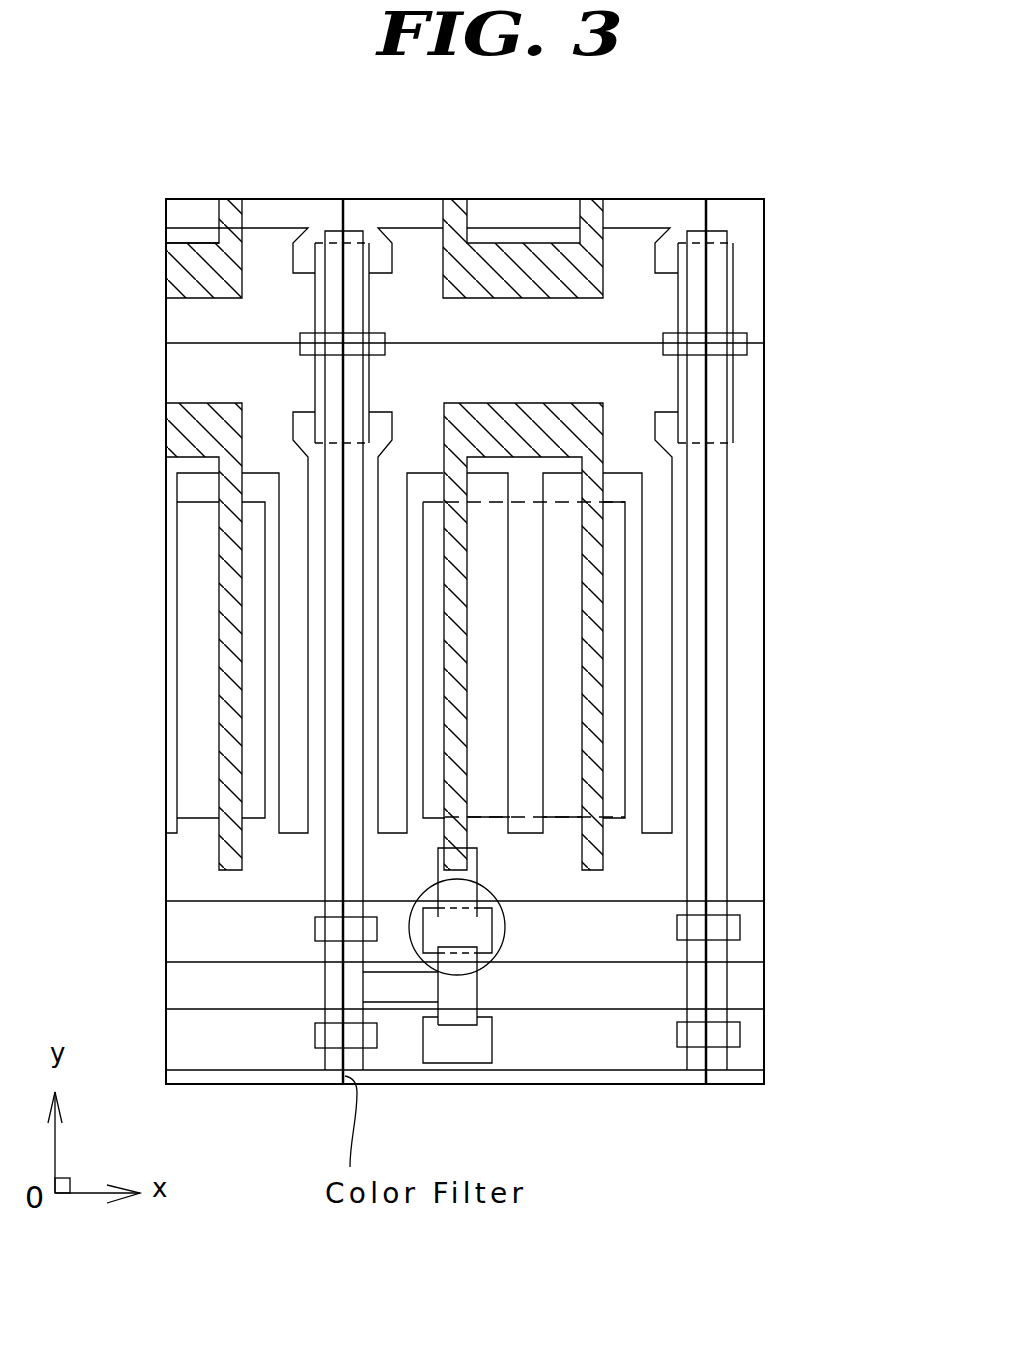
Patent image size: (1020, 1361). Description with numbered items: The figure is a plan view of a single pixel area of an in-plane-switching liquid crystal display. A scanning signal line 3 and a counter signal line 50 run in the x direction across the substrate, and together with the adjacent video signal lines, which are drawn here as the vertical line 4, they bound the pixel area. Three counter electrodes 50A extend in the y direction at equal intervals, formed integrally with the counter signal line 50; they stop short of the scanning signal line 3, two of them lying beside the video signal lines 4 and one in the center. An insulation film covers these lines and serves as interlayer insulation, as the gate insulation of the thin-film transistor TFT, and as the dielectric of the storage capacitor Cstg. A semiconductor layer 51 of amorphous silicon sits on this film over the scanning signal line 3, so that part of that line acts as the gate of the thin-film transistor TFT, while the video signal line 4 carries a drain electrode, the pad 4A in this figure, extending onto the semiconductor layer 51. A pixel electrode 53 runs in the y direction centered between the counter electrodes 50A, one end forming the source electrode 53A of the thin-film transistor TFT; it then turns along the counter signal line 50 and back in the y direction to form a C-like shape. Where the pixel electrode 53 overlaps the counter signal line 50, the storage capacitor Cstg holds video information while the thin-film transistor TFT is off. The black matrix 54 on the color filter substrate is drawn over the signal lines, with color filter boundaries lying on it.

The scanning signal line 3 is at (207, 944).
The drain signal line (data line) 4 is at (328, 735).
The drain signal line contact pad 4A is at (465, 1025).
The counter signal line 50 is at (417, 365).
The counter electrode 50A is at (390, 580).
The semiconductor layer 51 is at (492, 928).
The pixel electrode 53 is at (595, 570).
The source electrode 53A is at (479, 862).
The black matrix 54 is at (637, 737).
The storage capacitor Cstg is at (593, 438).
The thin-film transistor TFT is at (503, 940).